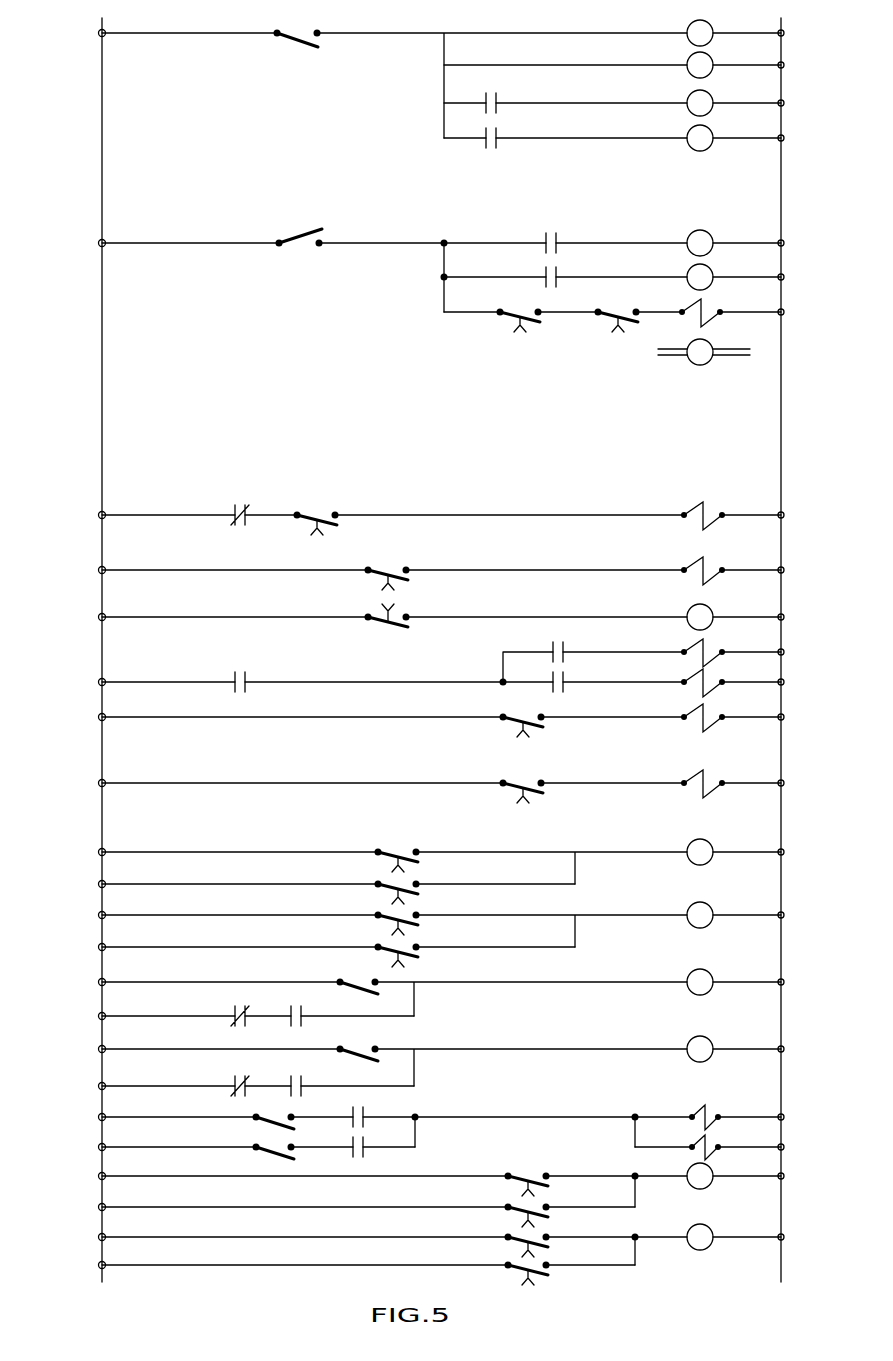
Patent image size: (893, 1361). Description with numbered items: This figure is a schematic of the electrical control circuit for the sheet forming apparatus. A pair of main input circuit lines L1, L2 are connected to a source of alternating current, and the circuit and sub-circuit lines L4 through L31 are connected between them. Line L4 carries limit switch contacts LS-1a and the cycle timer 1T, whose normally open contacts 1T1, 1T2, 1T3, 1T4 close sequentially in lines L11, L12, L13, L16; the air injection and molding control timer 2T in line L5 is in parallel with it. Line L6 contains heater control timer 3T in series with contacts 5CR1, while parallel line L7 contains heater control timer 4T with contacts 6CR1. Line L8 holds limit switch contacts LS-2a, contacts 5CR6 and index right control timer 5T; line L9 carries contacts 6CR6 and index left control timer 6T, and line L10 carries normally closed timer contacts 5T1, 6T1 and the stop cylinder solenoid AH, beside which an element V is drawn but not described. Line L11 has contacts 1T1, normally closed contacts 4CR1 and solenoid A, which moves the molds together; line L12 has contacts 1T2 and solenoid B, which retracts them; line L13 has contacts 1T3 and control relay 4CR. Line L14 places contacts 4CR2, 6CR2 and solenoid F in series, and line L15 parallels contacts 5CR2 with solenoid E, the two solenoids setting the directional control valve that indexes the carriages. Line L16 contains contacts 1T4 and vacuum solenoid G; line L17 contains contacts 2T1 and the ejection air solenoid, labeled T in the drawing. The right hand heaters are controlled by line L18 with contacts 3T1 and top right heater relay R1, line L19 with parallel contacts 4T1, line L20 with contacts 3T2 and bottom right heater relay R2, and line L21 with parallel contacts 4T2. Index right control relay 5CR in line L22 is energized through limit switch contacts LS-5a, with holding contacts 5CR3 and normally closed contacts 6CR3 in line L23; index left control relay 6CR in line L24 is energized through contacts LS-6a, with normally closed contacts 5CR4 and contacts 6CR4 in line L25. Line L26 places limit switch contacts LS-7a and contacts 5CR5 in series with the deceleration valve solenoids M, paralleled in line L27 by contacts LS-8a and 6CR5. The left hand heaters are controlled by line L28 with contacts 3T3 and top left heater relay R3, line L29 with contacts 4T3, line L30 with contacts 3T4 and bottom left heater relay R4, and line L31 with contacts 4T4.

The main input circuit line L1 is at (101, 66).
The main input circuit line L2 is at (784, 48).
The circuit line L4 is at (429, 33).
The circuit line L5 is at (444, 65).
The circuit line L6 is at (444, 103).
The circuit line L7 is at (444, 138).
The circuit line L8 is at (403, 243).
The circuit line L9 is at (444, 291).
The circuit line L10 is at (446, 318).
The circuit line L11 is at (132, 515).
The circuit line L12 is at (132, 570).
The circuit line L13 is at (132, 617).
The circuit line L14 is at (132, 682).
The circuit line L15 is at (523, 652).
The circuit line L16 is at (132, 717).
The circuit line L17 is at (132, 783).
The circuit line L18 is at (132, 852).
The circuit line L19 is at (132, 884).
The circuit line L20 is at (132, 915).
The circuit line L21 is at (132, 947).
The circuit line L22 is at (132, 982).
The circuit line L23 is at (132, 1016).
The circuit line L24 is at (132, 1049).
The circuit line L25 is at (132, 1086).
The circuit line L26 is at (132, 1117).
The circuit line L27 is at (132, 1147).
The circuit line L28 is at (132, 1176).
The circuit line L29 is at (132, 1207).
The circuit line L30 is at (132, 1237).
The circuit line L31 is at (132, 1265).
The limit switch contacts LS-1a is at (300, 36).
The normally open limit switch contacts LS-2a is at (300, 231).
The normally open limit switch contacts LS-5a is at (356, 982).
The limit switch contacts LS-6a is at (360, 1049).
The normally open limit switch contacts LS-7a is at (278, 1117).
The normally open limit switch contacts LS-8a is at (278, 1150).
The cycle timer 1T is at (712, 32).
The air injection and molding control timer 2T is at (712, 64).
The heater control timer 3T is at (712, 102).
The heater control timer 4T is at (712, 137).
The index right control timer 5T is at (712, 242).
The index left control timer 6T is at (712, 276).
The normally open relay contacts 5CR1 is at (501, 100).
The normally open relay contacts 6CR1 is at (501, 135).
The normally open relay contacts 5CR6 is at (553, 232).
The normally open relay contacts 6CR6 is at (556, 270).
The normally closed timer contacts 5T1 is at (518, 310).
The normally closed timer contacts 6T1 is at (616, 310).
The solenoid AH is at (708, 310).
The voltmeter V is at (710, 362).
The normally closed relay contacts 4CR1 is at (240, 505).
The normally open timer contacts 1T1 is at (322, 510).
The solenoid A is at (712, 505).
The normally open timer contacts 1T2 is at (393, 565).
The solenoid B is at (712, 560).
The normally open timer contacts 1T3 is at (398, 635).
The control relay 4CR is at (708, 615).
The normally open relay contacts 4CR2 is at (248, 678).
The normally open relay contacts 5CR2 is at (560, 650).
The normally open relay contacts 6CR2 is at (562, 684).
The solenoid E is at (718, 648).
The solenoid F is at (718, 680).
The timer contacts 1T4 is at (512, 722).
The solenoid G is at (718, 712).
The normally open timer contacts 2T1 is at (512, 788).
The solenoid valve T is at (718, 778).
The timer contacts 3T1 is at (398, 850).
The top right heater control relay R1 is at (712, 848).
The timer contacts 4T1 is at (400, 883).
The normally open timer contacts 3T2 is at (400, 913).
The bottom right heater control relay R2 is at (712, 911).
The timer contacts 4T2 is at (400, 945).
The index right control relay 5CR is at (710, 979).
The normally closed relay contacts 6CR3 is at (240, 1008).
The normally open relay contacts 5CR3 is at (298, 1014).
The index left control relay 6CR is at (710, 1047).
The normally closed relay contacts 5CR4 is at (240, 1078).
The normally open relay contacts 6CR4 is at (298, 1084).
The normally open relay contacts 5CR5 is at (358, 1116).
The solenoids M is at (718, 1110).
The normally open relay contacts 6CR5 is at (358, 1156).
The normally open timer contacts 3T3 is at (528, 1172).
The top left heater control relay R3 is at (715, 1175).
The normally open timer contacts 4T3 is at (538, 1206).
The timer contacts 3T4 is at (538, 1236).
The bottom left heater control relay R4 is at (715, 1238).
The normally open timer contacts 4T4 is at (538, 1264).